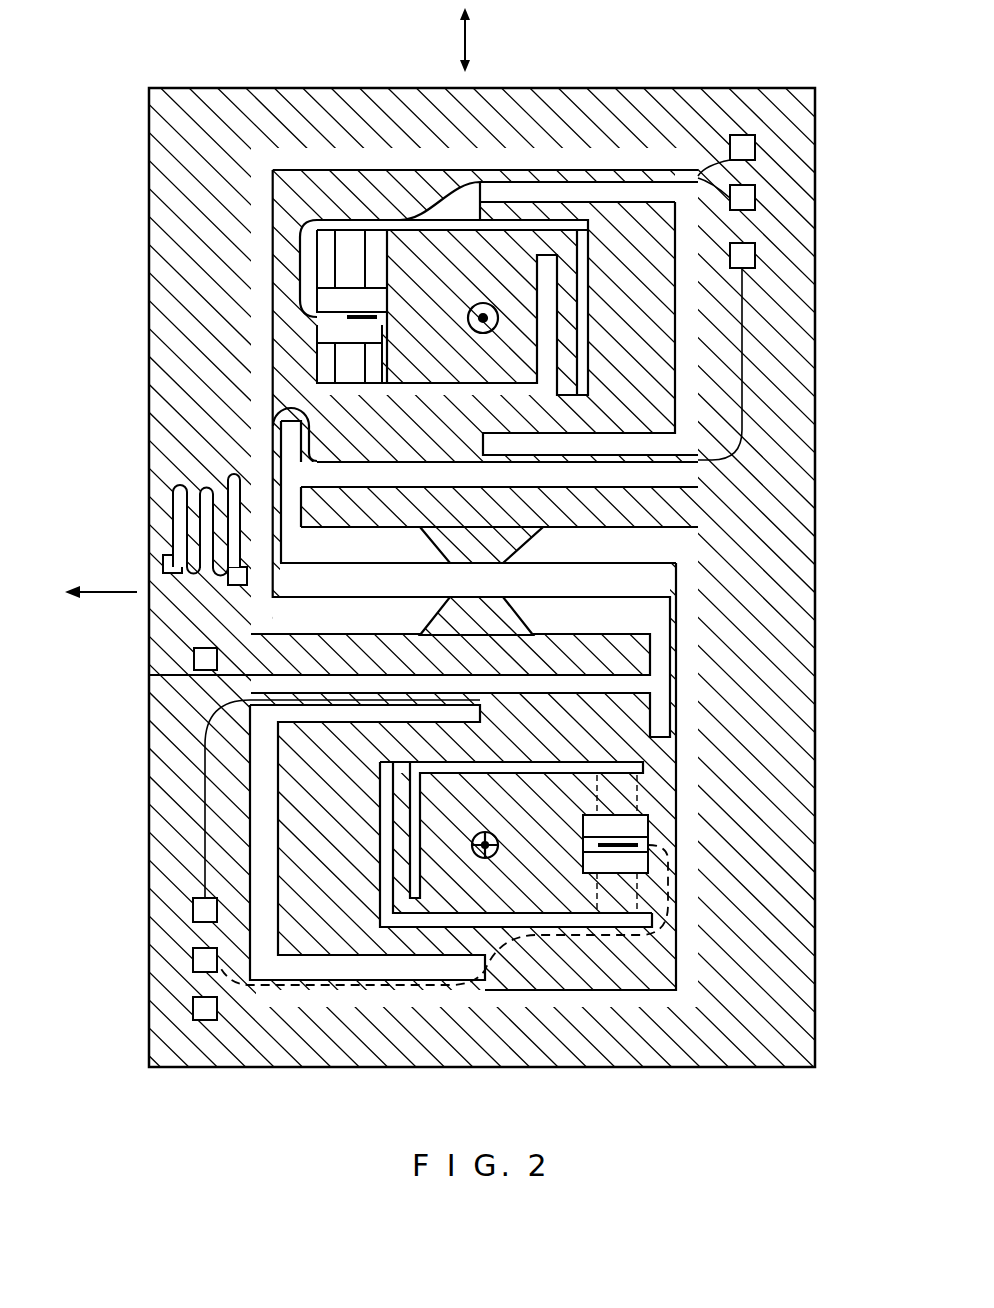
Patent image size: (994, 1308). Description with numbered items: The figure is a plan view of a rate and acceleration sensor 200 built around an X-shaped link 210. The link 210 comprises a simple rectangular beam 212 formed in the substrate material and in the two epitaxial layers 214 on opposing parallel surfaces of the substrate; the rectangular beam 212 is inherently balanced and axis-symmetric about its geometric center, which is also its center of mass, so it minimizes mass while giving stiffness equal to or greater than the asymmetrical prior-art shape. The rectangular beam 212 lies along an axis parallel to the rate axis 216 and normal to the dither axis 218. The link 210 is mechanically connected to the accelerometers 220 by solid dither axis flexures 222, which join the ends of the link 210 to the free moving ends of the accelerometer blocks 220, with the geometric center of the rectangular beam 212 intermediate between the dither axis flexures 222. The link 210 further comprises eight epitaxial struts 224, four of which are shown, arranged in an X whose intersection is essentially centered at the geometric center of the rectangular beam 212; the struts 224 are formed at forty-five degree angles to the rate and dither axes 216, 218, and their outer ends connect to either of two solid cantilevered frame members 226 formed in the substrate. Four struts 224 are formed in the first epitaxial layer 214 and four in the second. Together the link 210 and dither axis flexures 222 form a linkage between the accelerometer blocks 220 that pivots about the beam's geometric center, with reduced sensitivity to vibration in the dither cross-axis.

The rate and acceleration sensor 200 is at (118, 908).
The link 210 is at (668, 578).
The rectangular beam 212 is at (650, 562).
The epitaxial layer 214 is at (780, 1003).
The rate axis 216 is at (105, 592).
The dither axis 218 is at (476, 40).
The accelerometer 220 is at (266, 287).
The dither axis flexure 222 is at (262, 452).
The epitaxial strut 224 is at (527, 613).
The cantilevered frame member 226 is at (252, 614).